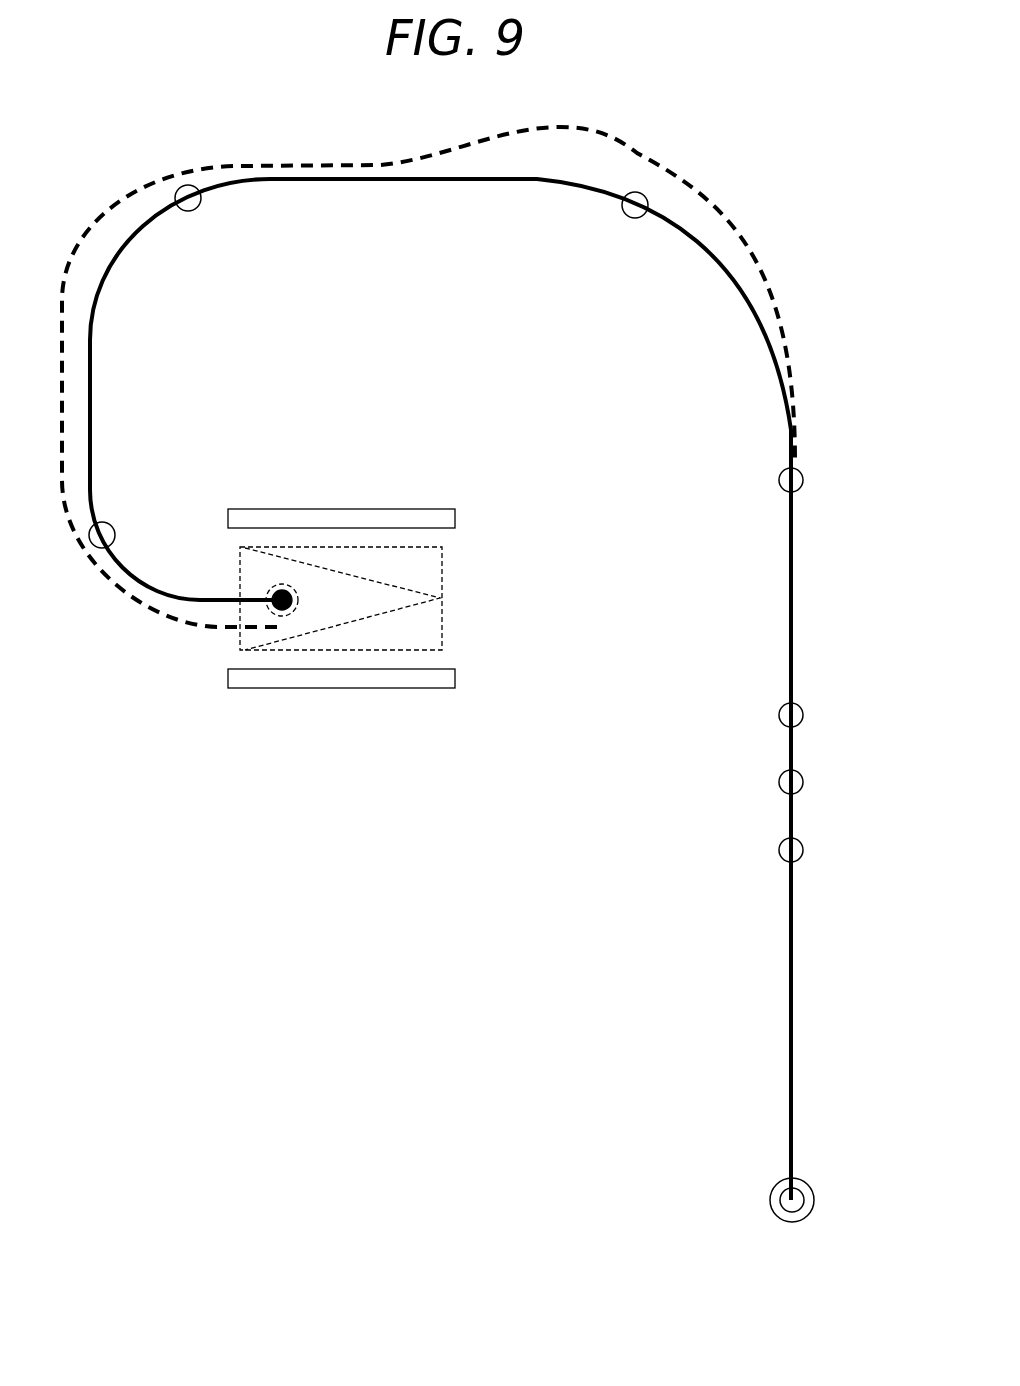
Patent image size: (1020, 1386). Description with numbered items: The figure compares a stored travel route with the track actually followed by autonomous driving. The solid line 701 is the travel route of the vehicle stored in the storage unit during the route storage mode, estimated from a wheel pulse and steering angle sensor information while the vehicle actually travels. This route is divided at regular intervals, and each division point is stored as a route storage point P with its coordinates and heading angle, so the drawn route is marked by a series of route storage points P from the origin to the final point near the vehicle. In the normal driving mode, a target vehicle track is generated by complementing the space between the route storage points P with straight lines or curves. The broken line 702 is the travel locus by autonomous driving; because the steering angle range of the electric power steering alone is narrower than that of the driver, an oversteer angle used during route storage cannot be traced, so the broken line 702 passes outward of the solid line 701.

The solid line 701 is at (757, 322).
The broken line 702 is at (637, 153).
The route storage point P is at (193, 210).